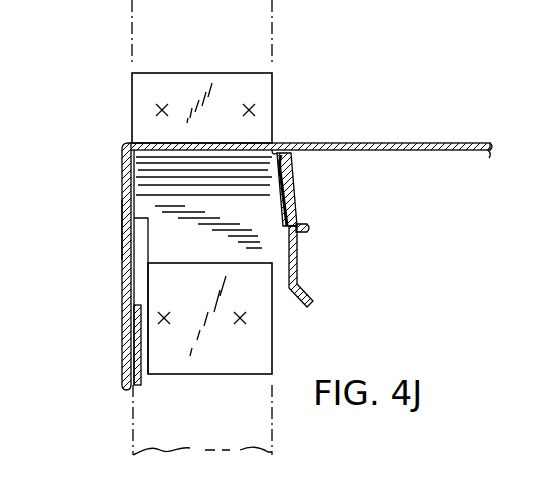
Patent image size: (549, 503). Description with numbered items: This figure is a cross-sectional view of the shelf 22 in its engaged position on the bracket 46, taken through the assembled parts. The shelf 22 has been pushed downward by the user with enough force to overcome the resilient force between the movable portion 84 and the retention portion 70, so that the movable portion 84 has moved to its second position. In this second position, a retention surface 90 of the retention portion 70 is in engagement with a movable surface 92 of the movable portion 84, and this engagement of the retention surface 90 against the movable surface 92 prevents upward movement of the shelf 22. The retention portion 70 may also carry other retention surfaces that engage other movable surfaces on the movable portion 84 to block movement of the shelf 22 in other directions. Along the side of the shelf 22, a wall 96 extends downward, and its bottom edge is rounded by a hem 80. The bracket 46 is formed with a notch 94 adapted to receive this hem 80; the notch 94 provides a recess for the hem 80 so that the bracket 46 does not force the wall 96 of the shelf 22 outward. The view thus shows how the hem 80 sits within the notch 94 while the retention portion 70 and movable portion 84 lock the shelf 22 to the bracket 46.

The bracket 46 is at (265, 90).
The shelf 22 is at (388, 148).
The movable portion 84 is at (297, 176).
The retention portion 70 is at (292, 211).
The retention surface 90 is at (305, 236).
The movable surface 92 is at (286, 280).
The wall 96 is at (125, 233).
The notch 94 is at (140, 270).
The hem 80 is at (127, 388).